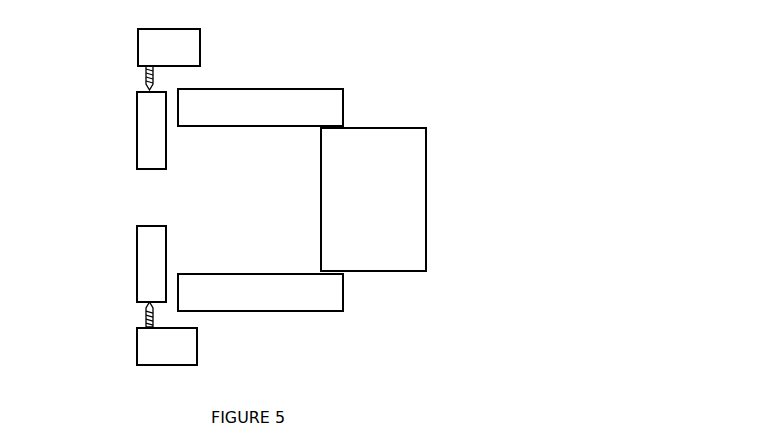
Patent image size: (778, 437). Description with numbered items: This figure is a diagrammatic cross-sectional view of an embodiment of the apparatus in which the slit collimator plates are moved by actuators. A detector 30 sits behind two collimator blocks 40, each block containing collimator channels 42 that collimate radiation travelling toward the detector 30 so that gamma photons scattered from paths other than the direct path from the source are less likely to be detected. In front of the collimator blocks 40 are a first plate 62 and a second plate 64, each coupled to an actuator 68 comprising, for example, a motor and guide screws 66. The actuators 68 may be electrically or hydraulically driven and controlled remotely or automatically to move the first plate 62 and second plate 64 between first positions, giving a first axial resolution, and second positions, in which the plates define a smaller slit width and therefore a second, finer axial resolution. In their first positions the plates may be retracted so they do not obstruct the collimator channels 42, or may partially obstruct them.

The detector 30 is at (365, 155).
The collimator block 40 is at (227, 100).
The collimator channel 42 is at (199, 232).
The first plate 62 is at (148, 109).
The second plate 64 is at (153, 289).
The guide screw 66 is at (147, 78).
The actuator 68 is at (148, 43).